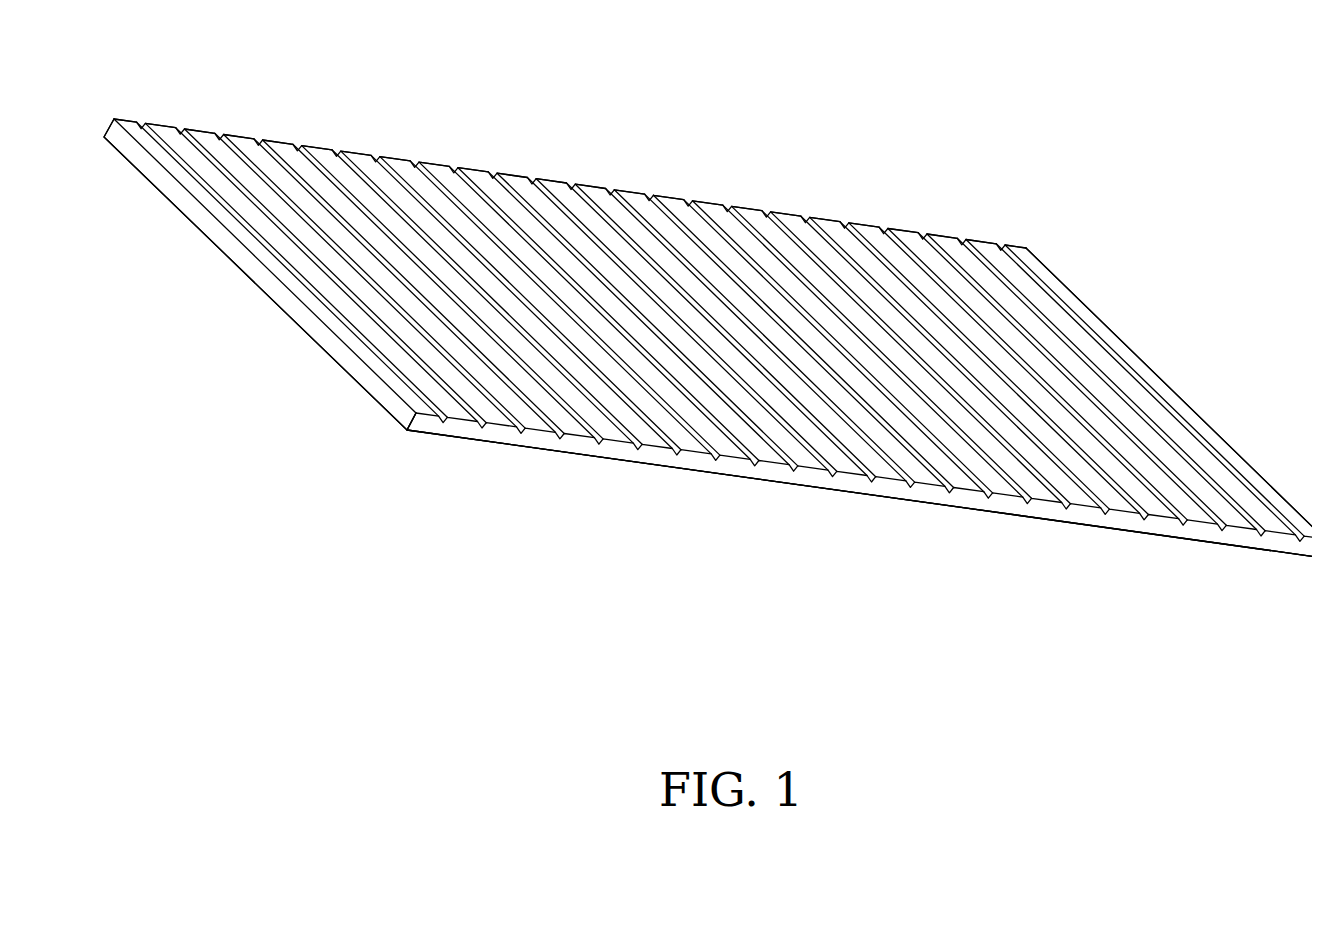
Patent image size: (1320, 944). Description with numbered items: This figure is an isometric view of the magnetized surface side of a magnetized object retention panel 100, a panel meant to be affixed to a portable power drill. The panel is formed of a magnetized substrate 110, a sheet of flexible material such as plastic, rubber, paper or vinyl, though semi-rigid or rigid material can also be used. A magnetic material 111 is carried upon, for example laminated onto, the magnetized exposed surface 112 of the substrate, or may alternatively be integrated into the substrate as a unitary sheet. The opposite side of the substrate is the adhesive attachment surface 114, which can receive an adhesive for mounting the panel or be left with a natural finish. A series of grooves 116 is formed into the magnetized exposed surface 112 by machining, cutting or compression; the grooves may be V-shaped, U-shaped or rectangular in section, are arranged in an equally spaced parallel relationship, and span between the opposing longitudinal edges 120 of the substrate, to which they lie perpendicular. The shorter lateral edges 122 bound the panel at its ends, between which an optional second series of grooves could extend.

The magnetized object retention panel 100 is at (708, 327).
The magnetized substrate 110 is at (925, 478).
The magnetic material 111 is at (996, 492).
The magnetized exposed surface 112 is at (688, 223).
The adhesive attachment surface 114 is at (729, 470).
The series of grooves 116 is at (495, 203).
The opposing longitudinal edges 120 is at (849, 211).
The lateral edges 122 is at (260, 258).